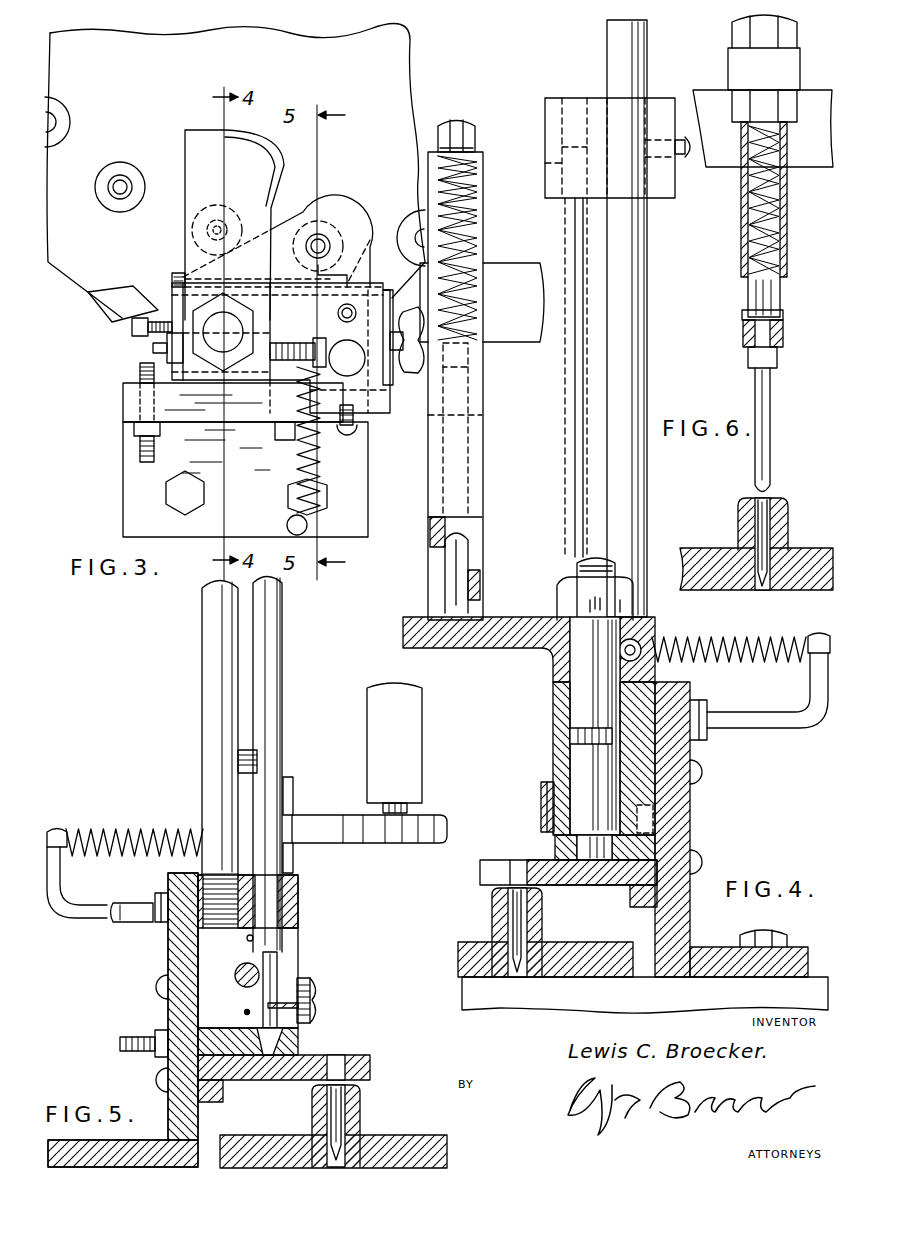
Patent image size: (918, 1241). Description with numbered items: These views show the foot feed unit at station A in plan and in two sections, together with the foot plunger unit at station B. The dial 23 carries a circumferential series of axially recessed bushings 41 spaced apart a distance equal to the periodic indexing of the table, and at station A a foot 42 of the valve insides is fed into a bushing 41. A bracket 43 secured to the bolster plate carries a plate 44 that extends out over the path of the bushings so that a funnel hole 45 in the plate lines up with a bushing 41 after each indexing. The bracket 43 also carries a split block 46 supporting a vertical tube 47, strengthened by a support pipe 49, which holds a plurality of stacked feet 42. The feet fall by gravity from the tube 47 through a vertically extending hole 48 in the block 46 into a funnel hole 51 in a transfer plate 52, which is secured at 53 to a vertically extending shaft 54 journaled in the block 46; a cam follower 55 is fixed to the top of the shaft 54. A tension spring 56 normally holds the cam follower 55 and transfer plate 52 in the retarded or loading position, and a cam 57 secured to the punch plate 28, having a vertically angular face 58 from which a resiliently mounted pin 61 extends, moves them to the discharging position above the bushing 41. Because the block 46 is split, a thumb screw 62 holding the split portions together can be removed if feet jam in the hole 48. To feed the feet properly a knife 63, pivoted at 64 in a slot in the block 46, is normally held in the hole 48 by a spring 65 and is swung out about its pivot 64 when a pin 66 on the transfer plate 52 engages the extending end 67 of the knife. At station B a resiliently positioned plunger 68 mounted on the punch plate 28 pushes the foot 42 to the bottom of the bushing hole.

In FIG. 4, the dial 23 is at (645, 995).
In FIG. 6, the dial 23 is at (690, 548).
In FIG. 5, the dial 23 is at (445, 1152).
In FIG. 4, the punch plate 28 is at (517, 344).
In FIG. 6, the punch plate 28 is at (812, 168).
In FIG. 3, the bushing 41 is at (125, 163).
In FIG. 4, the bushing 41 is at (490, 922).
In FIG. 6, the bushing 41 is at (790, 522).
In FIG. 5, the bushing 41 is at (362, 1106).
In FIG. 4, the foot 42 is at (513, 975).
In FIG. 6, the foot 42 is at (763, 590).
In FIG. 5, the foot 42 is at (356, 1142).
In FIG. 3, the bracket 43 is at (128, 478).
In FIG. 4, the bracket 43 is at (695, 862).
In FIG. 5, the bracket 43 is at (166, 955).
In FIG. 4, the plate 44 is at (482, 880).
In FIG. 5, the plate 44 is at (366, 1056).
In FIG. 3, the funnel hole 45 is at (322, 244).
In FIG. 4, the funnel hole 45 is at (510, 868).
In FIG. 5, the funnel hole 45 is at (338, 1052).
In FIG. 5, the split block 46 is at (298, 932).
In FIG. 3, the vertical tube 47 is at (302, 342).
In FIG. 4, the vertical tube 47 is at (562, 395).
In FIG. 5, the vertical tube 47 is at (284, 684).
In FIG. 5, the vertical hole 48 is at (281, 988).
In FIG. 3, the support pipe 49 is at (349, 340).
In FIG. 4, the support pipe 49 is at (648, 296).
In FIG. 5, the support pipe 49 is at (203, 697).
In FIG. 5, the funnel hole 51 is at (305, 1028).
In FIG. 4, the transfer plate 52 is at (553, 846).
In FIG. 5, the transfer plate 52 is at (218, 1035).
In FIG. 4, the securing means 53 is at (588, 862).
In FIG. 3, the shaft 54 is at (252, 340).
In FIG. 4, the shaft 54 is at (580, 762).
In FIG. 3, the cam follower 55 is at (190, 175).
In FIG. 4, the cam follower 55 is at (505, 650).
In FIG. 5, the cam follower 55 is at (376, 845).
In FIG. 3, the tension spring 56 is at (316, 451).
In FIG. 4, the tension spring 56 is at (722, 636).
In FIG. 5, the tension spring 56 is at (124, 830).
In FIG. 4, the cam 57 is at (483, 478).
In FIG. 5, the cam 57 is at (424, 750).
In FIG. 4, the cam face 58 is at (478, 552).
In FIG. 4, the pin 61 is at (470, 592).
In FIG. 5, the pin 61 is at (410, 809).
In FIG. 3, the thumb screw 62 is at (395, 385).
In FIG. 5, the thumb screw 62 is at (235, 975).
In FIG. 3, the knife 63 is at (372, 250).
In FIG. 5, the knife 63 is at (247, 1012).
In FIG. 3, the pivot 64 is at (273, 277).
In FIG. 3, the spring 65 is at (178, 276).
In FIG. 4, the spring 65 is at (540, 803).
In FIG. 5, the spring 65 is at (305, 984).
In FIG. 3, the pin 66 is at (362, 408).
In FIG. 4, the pin 66 is at (655, 822).
In FIG. 3, the extending end 67 is at (390, 290).
In FIG. 6, the plunger 68 is at (773, 443).